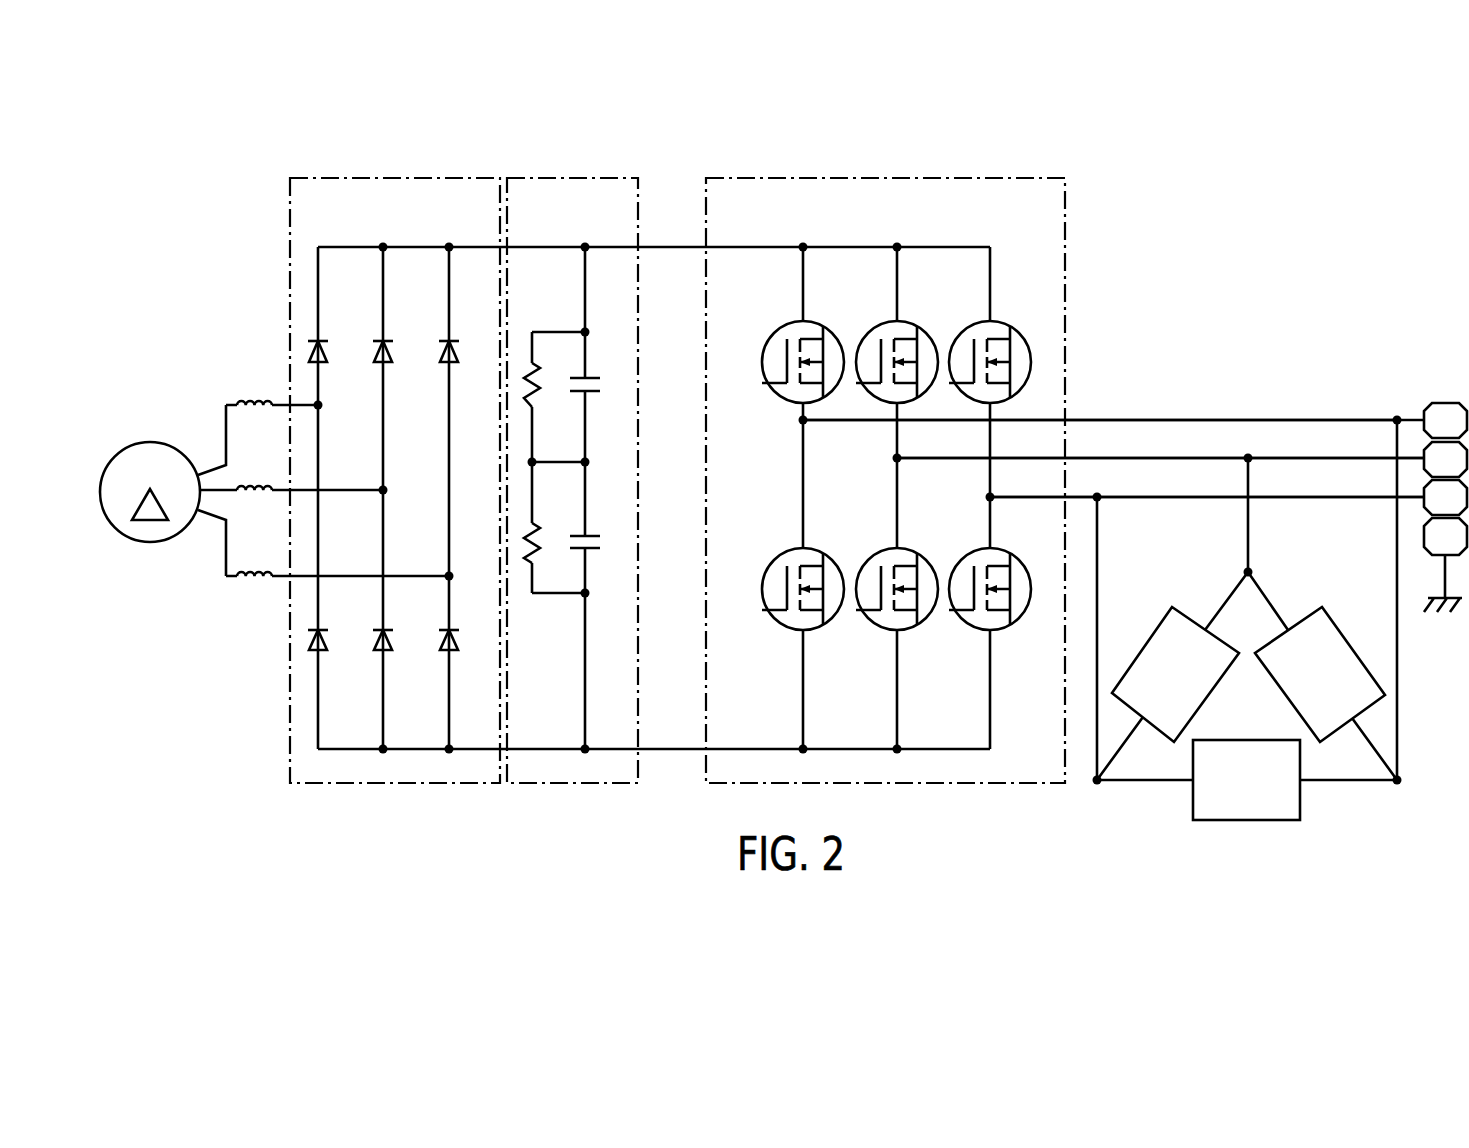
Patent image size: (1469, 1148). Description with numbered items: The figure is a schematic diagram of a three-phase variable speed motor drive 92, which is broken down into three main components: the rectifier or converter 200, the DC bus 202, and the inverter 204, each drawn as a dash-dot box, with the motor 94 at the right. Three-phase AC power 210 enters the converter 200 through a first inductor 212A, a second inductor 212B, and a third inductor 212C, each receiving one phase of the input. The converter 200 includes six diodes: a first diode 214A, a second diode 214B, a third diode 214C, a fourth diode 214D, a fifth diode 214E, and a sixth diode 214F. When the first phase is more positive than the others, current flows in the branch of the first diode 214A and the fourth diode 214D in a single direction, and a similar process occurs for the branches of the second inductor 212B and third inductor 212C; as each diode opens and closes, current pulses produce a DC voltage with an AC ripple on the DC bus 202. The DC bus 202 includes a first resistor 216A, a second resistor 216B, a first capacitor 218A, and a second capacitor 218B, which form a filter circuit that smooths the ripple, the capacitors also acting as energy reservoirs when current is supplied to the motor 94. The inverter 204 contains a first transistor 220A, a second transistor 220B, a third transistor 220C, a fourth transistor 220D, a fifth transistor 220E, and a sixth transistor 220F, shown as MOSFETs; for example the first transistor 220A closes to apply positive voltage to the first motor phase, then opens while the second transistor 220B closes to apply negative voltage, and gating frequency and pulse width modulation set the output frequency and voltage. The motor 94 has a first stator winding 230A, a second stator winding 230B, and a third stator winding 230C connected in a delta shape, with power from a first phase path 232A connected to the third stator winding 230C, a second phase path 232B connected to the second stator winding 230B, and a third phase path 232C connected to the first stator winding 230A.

The variable speed motor drive 92 is at (1213, 170).
The motor 94 is at (1410, 420).
The converter 200 is at (395, 178).
The DC bus 202 is at (575, 178).
The inverter 204 is at (886, 178).
The three-phase AC power 210 is at (132, 446).
The first inductor 212A is at (238, 402).
The second inductor 212B is at (222, 466).
The third inductor 212C is at (253, 580).
The first diode 214A is at (312, 652).
The second diode 214B is at (378, 652).
The third diode 214C is at (445, 652).
The fourth diode 214D is at (314, 340).
The fifth diode 214E is at (381, 338).
The sixth diode 214F is at (448, 338).
The first resistor 216A is at (535, 368).
The second resistor 216B is at (532, 560).
The first capacitor 218A is at (594, 395).
The second capacitor 218B is at (594, 553).
The first transistor 220A is at (788, 323).
The second transistor 220B is at (788, 550).
The third transistor 220C is at (881, 323).
The fourth transistor 220D is at (881, 550).
The fifth transistor 220E is at (974, 323).
The sixth transistor 220F is at (975, 550).
The first stator winding 230A is at (1158, 628).
The second stator winding 230B is at (1340, 630).
The third stator winding 230C is at (1245, 820).
The first phase path 232A is at (1165, 420).
The second phase path 232B is at (1208, 458).
The third phase path 232C is at (1298, 497).